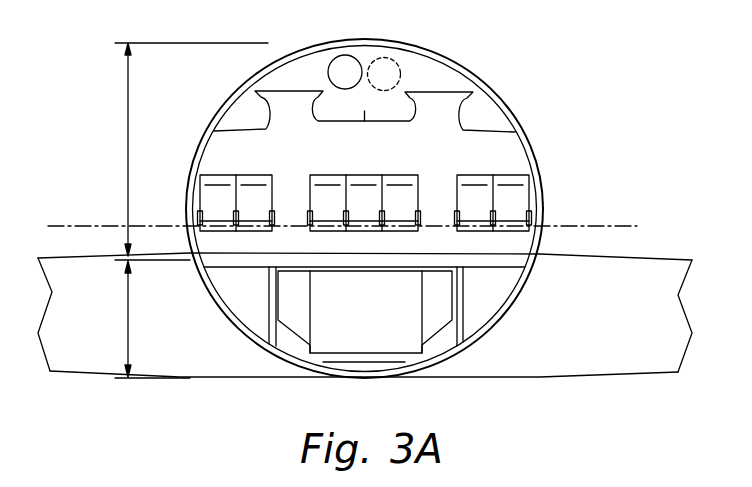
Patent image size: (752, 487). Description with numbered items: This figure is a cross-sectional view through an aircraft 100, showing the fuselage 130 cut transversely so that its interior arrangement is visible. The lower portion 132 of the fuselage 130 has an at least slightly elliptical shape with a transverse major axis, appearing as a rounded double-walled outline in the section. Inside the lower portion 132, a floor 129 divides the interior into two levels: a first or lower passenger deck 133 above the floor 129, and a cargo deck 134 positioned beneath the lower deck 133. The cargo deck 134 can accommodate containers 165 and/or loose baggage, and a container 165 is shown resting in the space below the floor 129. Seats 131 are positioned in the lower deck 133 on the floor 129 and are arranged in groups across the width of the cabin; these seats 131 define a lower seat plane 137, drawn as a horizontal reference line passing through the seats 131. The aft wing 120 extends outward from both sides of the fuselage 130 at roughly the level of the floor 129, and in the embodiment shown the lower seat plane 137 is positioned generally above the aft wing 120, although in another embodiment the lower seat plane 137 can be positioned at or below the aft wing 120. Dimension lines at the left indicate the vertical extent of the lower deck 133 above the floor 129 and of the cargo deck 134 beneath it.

The aircraft 100 is at (530, 76).
The aft wing 120 is at (638, 267).
The floor 129 is at (428, 262).
The fuselage 130 is at (546, 137).
The seats 131 is at (329, 189).
The lower portion 132 is at (543, 204).
The lower passenger deck 133 is at (128, 126).
The cargo deck 134 is at (128, 320).
The lower seat plane 137 is at (105, 224).
The containers 165 is at (420, 333).